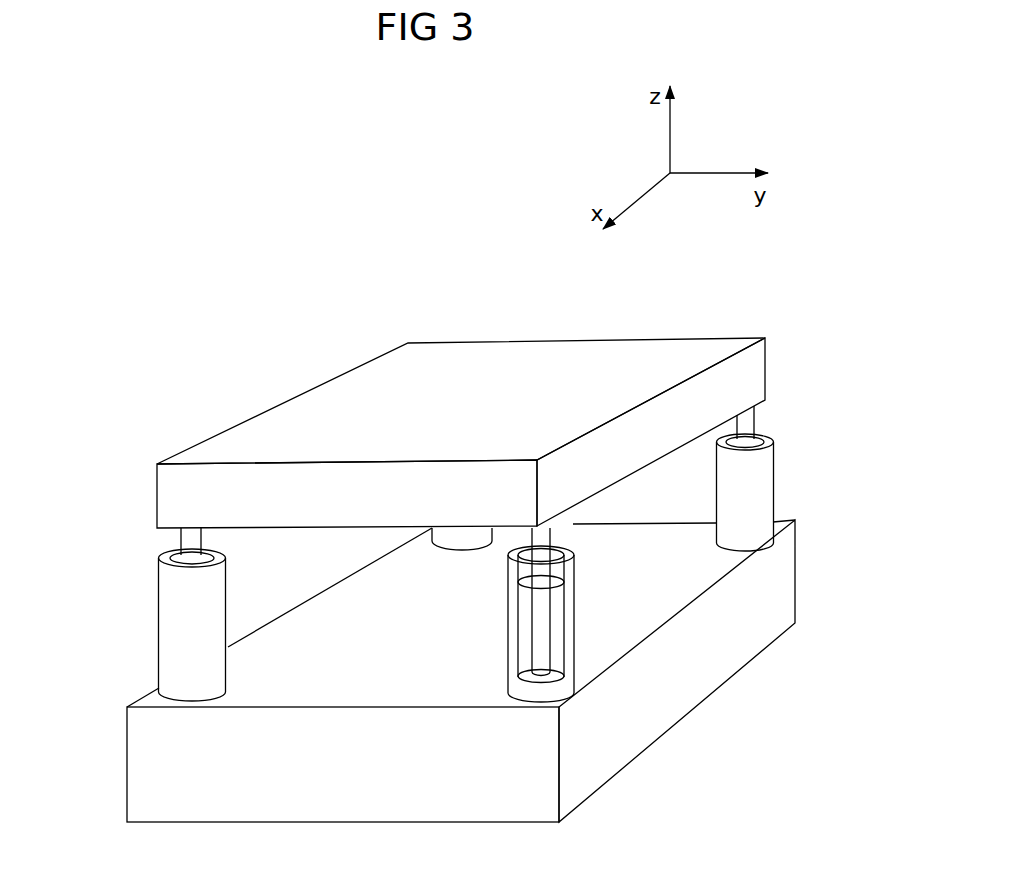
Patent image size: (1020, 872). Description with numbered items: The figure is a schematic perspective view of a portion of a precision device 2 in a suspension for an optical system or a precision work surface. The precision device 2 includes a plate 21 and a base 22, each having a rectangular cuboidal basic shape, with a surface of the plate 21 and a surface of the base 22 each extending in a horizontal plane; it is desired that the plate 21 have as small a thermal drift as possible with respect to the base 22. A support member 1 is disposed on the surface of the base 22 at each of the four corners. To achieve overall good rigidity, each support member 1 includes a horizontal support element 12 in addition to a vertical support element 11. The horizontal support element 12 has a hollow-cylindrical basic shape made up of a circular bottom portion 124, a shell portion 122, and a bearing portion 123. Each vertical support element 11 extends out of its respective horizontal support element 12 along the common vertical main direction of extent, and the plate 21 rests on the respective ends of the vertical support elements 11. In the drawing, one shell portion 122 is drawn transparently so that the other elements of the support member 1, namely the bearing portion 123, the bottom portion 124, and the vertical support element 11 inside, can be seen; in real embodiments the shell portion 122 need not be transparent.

The support member 1 is at (143, 599).
The precision device 2 is at (184, 335).
The vertical support element 11 is at (186, 543).
The horizontal support element 12 is at (232, 601).
The plate 21 is at (356, 394).
The base 22 is at (150, 774).
The shell portion 122 is at (444, 538).
The bearing portion 123 is at (553, 581).
The circular bottom portion 124 is at (554, 678).